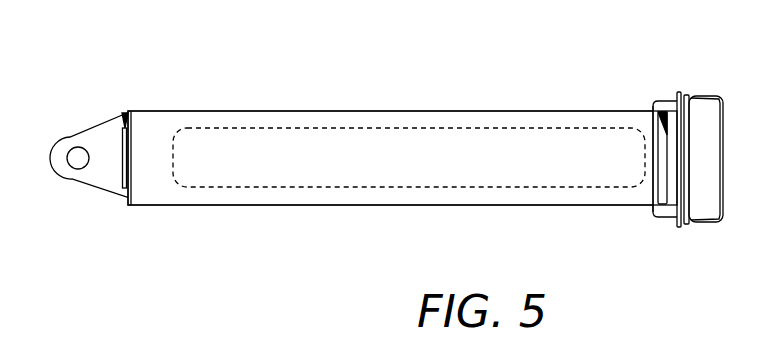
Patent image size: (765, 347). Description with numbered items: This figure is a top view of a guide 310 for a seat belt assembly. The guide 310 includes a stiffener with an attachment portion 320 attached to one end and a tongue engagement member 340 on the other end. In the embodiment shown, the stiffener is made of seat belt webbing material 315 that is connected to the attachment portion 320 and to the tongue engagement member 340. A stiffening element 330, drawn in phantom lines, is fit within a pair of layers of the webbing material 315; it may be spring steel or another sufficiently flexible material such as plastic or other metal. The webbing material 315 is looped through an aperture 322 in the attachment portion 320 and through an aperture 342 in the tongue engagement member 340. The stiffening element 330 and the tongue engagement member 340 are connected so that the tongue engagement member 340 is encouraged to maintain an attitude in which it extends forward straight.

The guide 310 is at (399, 86).
The seat belt webbing material 315 is at (192, 193).
The attachment portion 320 is at (103, 146).
The aperture 322 is at (126, 110).
The stiffening element 330 is at (358, 167).
The tongue engagement member 340 is at (710, 112).
The aperture 342 is at (665, 132).